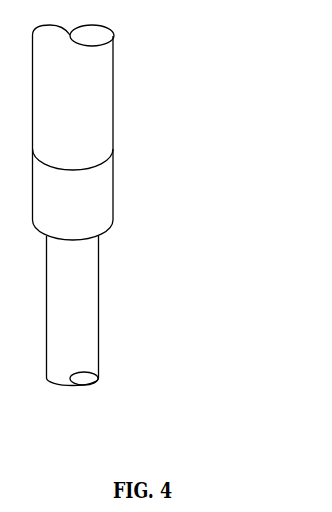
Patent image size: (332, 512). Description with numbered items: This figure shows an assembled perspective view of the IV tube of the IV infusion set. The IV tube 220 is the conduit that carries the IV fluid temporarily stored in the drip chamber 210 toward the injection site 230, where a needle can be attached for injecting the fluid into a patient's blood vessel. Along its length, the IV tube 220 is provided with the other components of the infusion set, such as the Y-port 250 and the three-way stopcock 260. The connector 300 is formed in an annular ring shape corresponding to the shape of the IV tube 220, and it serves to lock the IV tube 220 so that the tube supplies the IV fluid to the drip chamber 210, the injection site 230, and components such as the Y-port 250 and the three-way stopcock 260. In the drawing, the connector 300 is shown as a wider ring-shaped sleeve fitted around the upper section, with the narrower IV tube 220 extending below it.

The drip chamber 210 is at (159, 87).
The injection site 230 is at (159, 87).
The Y-port 250 is at (159, 87).
The three-way stopcock 260 is at (113, 92).
The connector 300 is at (113, 185).
The IV tube 220 is at (99, 309).